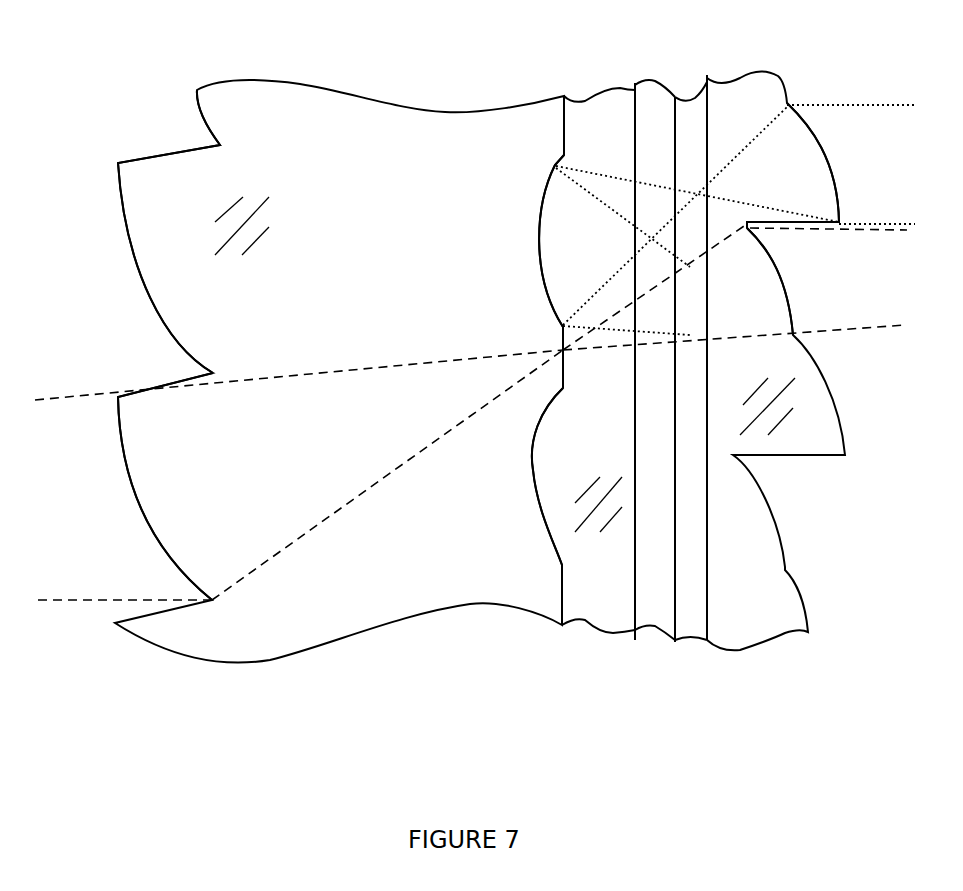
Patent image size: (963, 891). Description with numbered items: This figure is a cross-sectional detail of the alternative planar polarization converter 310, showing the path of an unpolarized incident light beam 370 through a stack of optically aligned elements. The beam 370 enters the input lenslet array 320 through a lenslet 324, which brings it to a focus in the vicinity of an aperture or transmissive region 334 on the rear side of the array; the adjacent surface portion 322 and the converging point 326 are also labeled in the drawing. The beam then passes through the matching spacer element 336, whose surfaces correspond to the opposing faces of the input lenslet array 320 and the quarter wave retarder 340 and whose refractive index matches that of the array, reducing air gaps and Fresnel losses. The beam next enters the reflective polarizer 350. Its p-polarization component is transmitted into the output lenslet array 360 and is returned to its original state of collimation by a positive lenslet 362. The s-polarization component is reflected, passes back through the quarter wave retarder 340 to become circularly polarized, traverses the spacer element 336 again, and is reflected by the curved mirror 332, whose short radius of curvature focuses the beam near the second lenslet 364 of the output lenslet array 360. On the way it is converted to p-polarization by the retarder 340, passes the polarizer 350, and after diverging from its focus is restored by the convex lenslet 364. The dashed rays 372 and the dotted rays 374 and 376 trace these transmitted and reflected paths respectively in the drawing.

The planar polarization converter 310 is at (525, 48).
The input lenslet array 320 is at (397, 590).
The upper left surface portion of first lens 322 is at (180, 148).
The lenslet 324 is at (130, 497).
The apex / focal point on right surface of first lens 326 is at (562, 350).
The curved mirror 332 is at (540, 198).
The aperture or transmissive region 334 is at (567, 370).
The spacer element 336 is at (600, 607).
The quarter wave retarder 340 is at (648, 618).
The reflective polarizer 350 is at (687, 632).
The output lenslet array 360 is at (753, 617).
The positive lenslet 362 is at (792, 300).
The second lenslet 364 is at (817, 128).
The incident light beam 370 is at (115, 550).
The outgoing light rays 372 is at (842, 273).
The internal reflected rays 374 is at (577, 265).
The exiting rays 376 is at (863, 165).